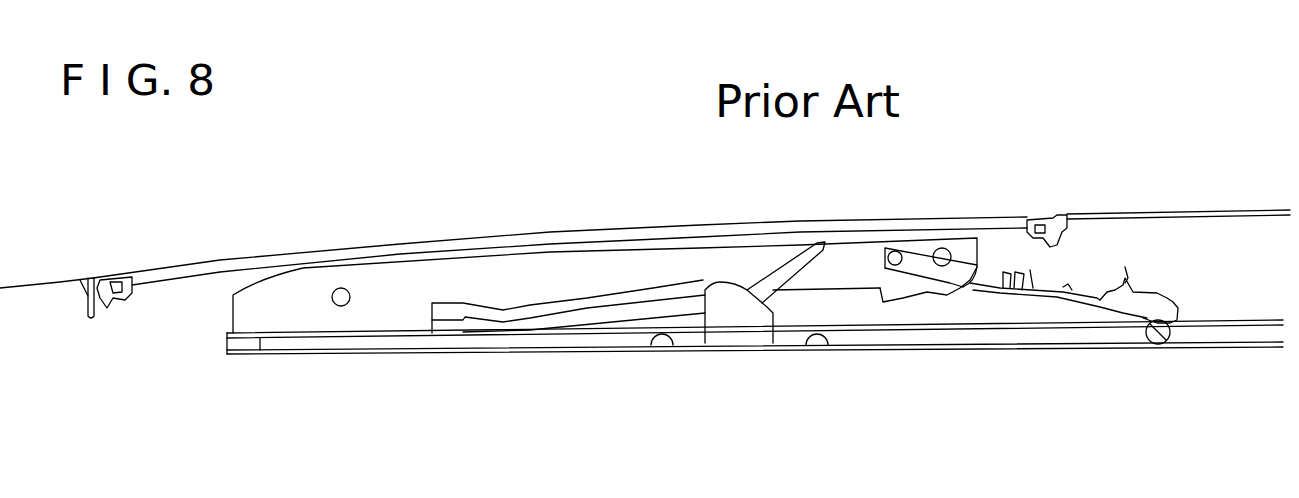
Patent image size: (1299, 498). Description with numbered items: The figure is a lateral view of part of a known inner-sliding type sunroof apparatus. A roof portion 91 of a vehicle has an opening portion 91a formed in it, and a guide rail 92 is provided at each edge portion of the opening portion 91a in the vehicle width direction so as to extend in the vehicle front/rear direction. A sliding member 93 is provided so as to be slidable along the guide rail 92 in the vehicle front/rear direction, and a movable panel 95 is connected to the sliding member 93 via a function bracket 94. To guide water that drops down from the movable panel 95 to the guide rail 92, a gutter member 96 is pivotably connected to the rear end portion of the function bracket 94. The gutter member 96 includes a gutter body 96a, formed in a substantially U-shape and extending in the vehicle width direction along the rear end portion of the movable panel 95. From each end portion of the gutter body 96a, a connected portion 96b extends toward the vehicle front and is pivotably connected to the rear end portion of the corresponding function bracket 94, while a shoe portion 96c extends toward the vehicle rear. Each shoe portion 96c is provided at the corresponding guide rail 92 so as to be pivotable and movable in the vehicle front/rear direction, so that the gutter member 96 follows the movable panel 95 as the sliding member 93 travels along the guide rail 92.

The roof portion 91 is at (645, 230).
The opening portion 91a is at (101, 267).
The guide rail 92 is at (755, 365).
The sliding member 93 is at (792, 320).
The function bracket 94 is at (605, 263).
The movable panel 95 is at (560, 240).
The gutter member 96 is at (1039, 272).
The gutter body 96a is at (1060, 342).
The connected portion 96b is at (956, 240).
The shoe portion 96c is at (1149, 297).